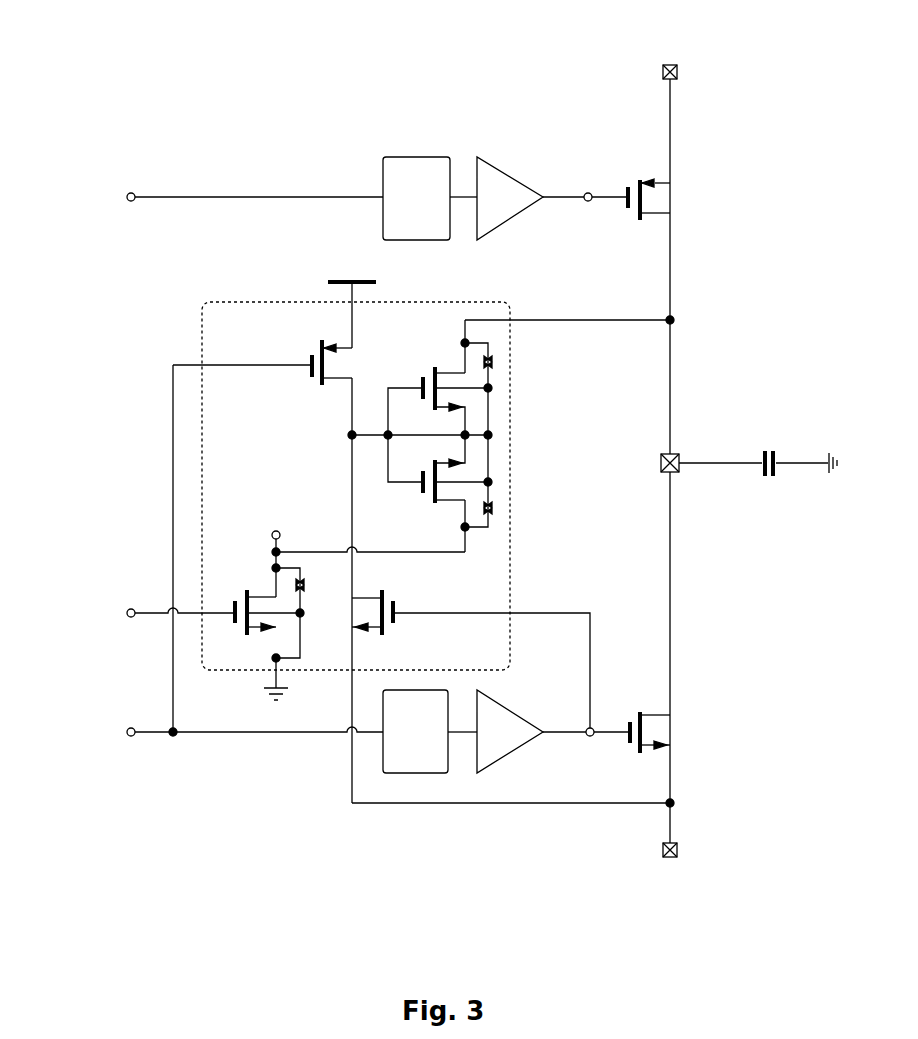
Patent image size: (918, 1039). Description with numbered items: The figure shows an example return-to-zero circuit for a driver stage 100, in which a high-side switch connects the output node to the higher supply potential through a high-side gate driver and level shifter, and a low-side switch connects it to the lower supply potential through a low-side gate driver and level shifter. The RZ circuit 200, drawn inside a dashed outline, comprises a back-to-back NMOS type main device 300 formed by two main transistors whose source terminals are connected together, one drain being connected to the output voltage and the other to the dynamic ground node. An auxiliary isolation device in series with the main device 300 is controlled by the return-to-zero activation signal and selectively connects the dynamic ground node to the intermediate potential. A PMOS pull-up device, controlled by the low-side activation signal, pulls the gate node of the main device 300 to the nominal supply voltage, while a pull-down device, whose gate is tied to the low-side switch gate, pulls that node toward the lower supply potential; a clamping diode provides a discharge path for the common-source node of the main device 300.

The driver stage 100 is at (215, 128).
The RZ circuit 200 is at (258, 301).
The back-to-back NMOS type main device 300 is at (503, 420).